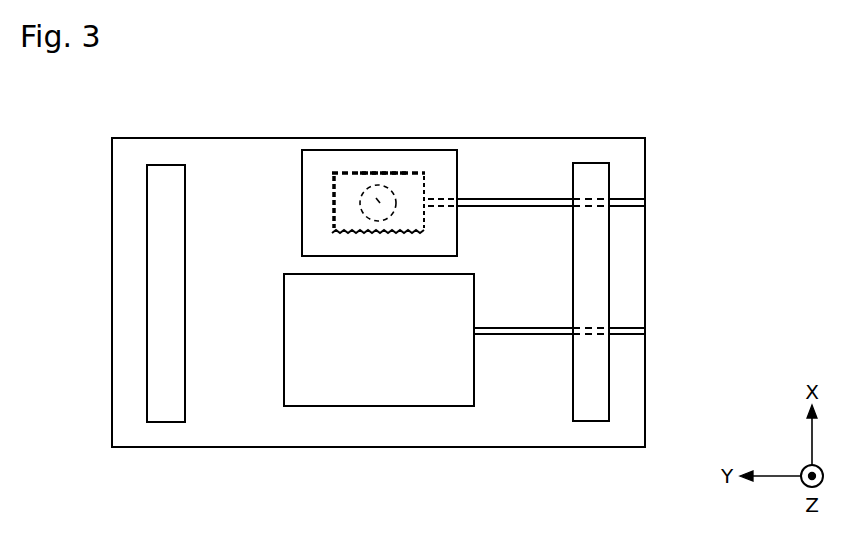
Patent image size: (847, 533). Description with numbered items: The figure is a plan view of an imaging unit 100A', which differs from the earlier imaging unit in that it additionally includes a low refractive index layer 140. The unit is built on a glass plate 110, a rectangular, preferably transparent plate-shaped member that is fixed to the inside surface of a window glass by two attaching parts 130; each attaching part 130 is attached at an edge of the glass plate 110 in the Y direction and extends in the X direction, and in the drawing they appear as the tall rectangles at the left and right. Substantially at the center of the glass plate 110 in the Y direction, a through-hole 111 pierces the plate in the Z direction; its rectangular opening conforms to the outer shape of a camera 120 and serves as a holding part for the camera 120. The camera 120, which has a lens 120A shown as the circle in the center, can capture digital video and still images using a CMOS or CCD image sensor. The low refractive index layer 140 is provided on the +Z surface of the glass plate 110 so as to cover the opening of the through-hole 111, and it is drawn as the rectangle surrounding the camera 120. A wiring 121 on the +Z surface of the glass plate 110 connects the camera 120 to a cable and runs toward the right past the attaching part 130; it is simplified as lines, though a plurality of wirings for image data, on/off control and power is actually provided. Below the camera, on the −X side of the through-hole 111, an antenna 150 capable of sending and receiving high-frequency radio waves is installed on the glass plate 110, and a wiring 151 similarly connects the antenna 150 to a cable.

The imaging unit 100A' is at (621, 107).
The glass plate 110 is at (112, 424).
The through-hole 111 is at (330, 173).
The camera 120 is at (352, 164).
The lens 120A is at (393, 170).
The wiring 121 is at (625, 199).
The attaching part 130 is at (590, 268).
The low refractive index layer 140 is at (457, 168).
The antenna 150 is at (338, 382).
The wiring 151 is at (625, 328).